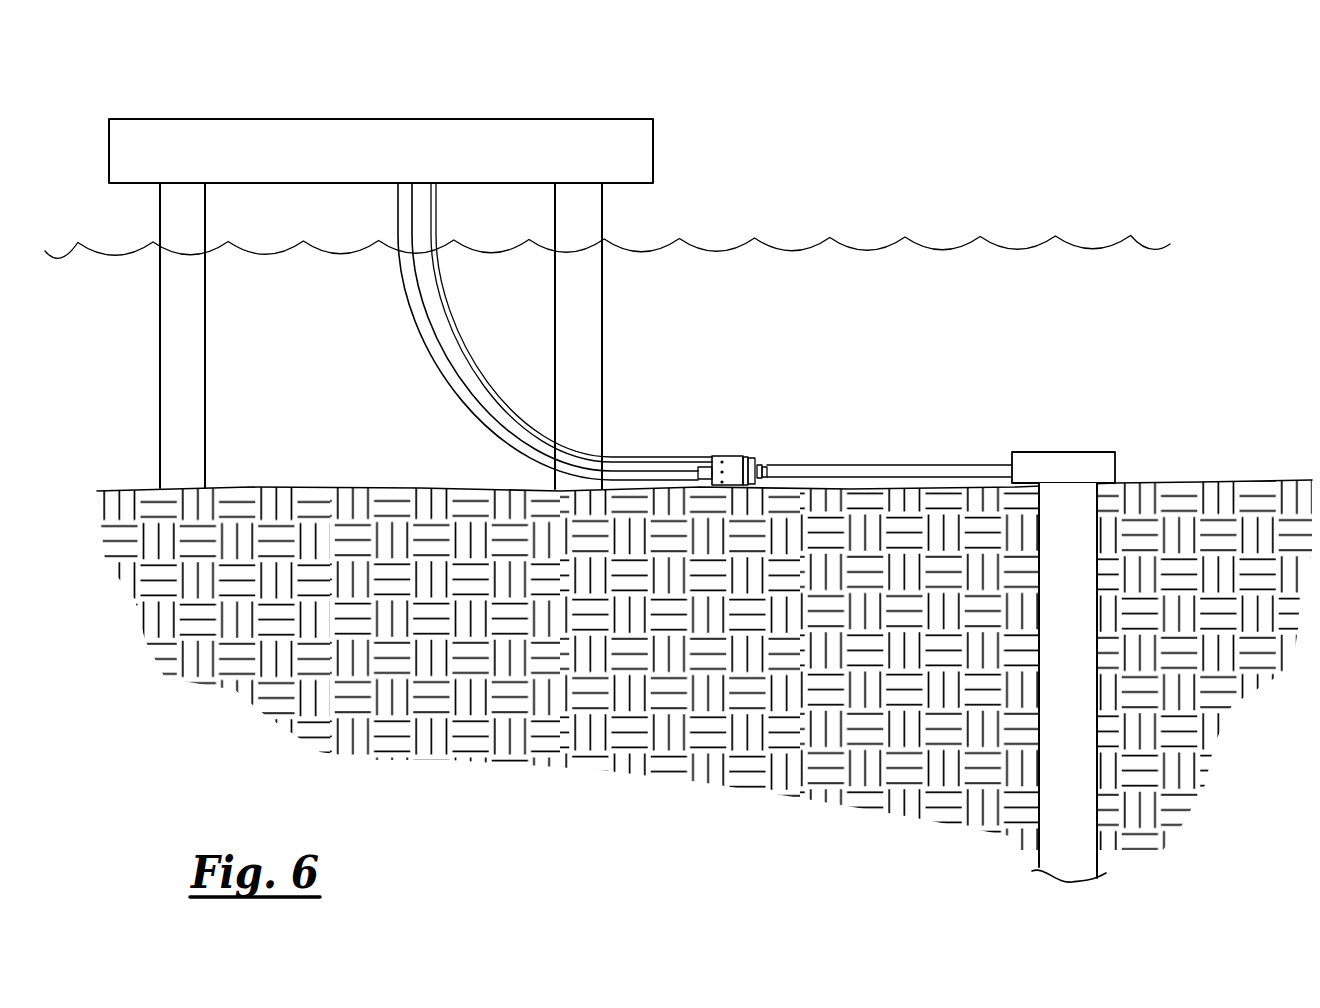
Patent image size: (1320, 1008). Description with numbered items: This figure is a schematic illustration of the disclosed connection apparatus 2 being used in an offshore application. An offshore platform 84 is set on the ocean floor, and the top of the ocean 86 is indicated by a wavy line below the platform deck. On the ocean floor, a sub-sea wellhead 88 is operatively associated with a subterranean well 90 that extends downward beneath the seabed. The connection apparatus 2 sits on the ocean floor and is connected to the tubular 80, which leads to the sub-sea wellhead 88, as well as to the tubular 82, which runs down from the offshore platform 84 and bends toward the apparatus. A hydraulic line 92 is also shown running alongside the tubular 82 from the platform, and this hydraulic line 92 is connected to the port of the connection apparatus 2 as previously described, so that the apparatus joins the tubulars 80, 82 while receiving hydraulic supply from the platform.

The offshore platform 84 is at (138, 121).
The top of the ocean 86 is at (856, 244).
The hydraulic line 92 is at (447, 334).
The tubular 82 is at (442, 386).
The connection apparatus 2 is at (728, 456).
The tubular 80 is at (916, 464).
The sub-sea wellhead 88 is at (1100, 452).
The subterranean well 90 is at (1088, 745).